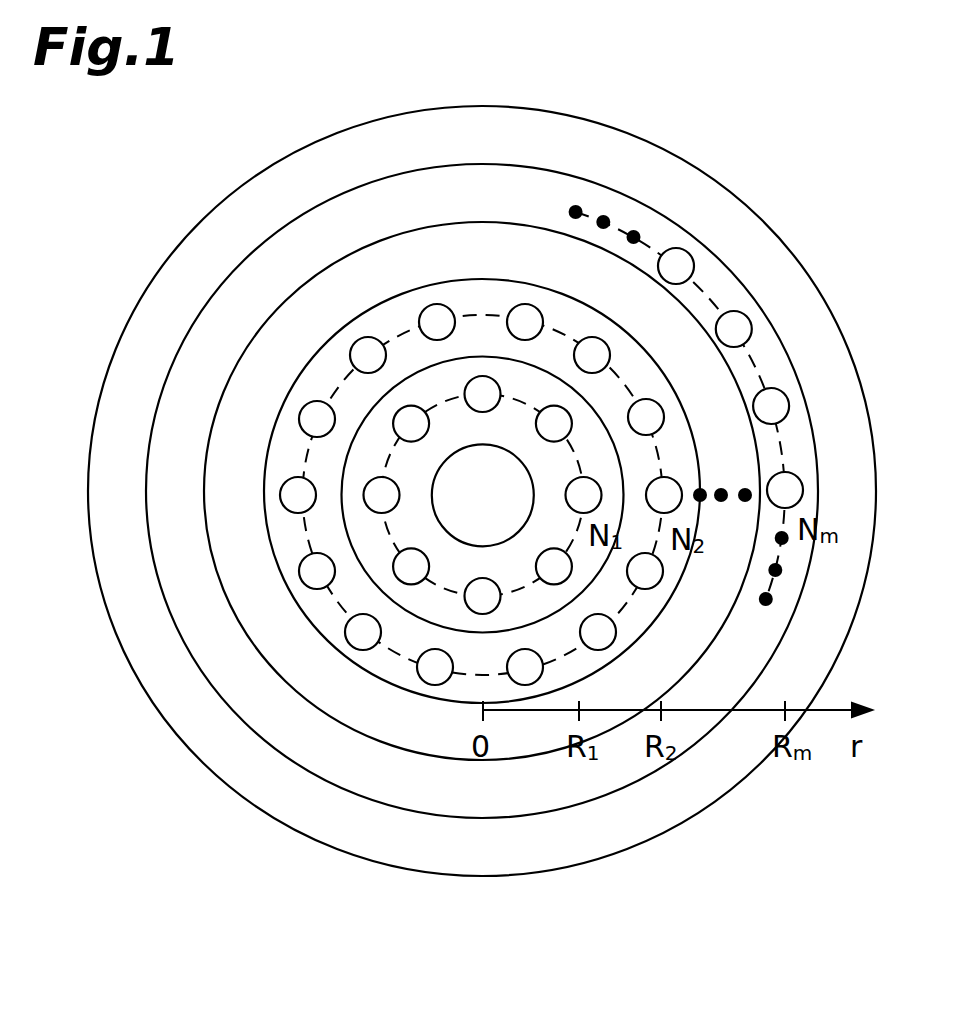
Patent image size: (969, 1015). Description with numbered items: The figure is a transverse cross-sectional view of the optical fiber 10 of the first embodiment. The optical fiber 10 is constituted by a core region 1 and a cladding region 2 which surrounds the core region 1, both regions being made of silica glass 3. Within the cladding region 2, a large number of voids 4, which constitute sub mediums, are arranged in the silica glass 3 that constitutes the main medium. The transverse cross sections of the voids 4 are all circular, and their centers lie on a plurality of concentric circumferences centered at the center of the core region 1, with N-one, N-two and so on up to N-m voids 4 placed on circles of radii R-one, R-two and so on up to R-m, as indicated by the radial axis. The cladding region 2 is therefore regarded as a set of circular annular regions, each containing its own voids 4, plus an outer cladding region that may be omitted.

The core region 1 is at (443, 483).
The cladding region 2 is at (410, 620).
The silica glass 3 is at (640, 363).
The voids 4 is at (660, 397).
The optical fiber 10 is at (732, 122).